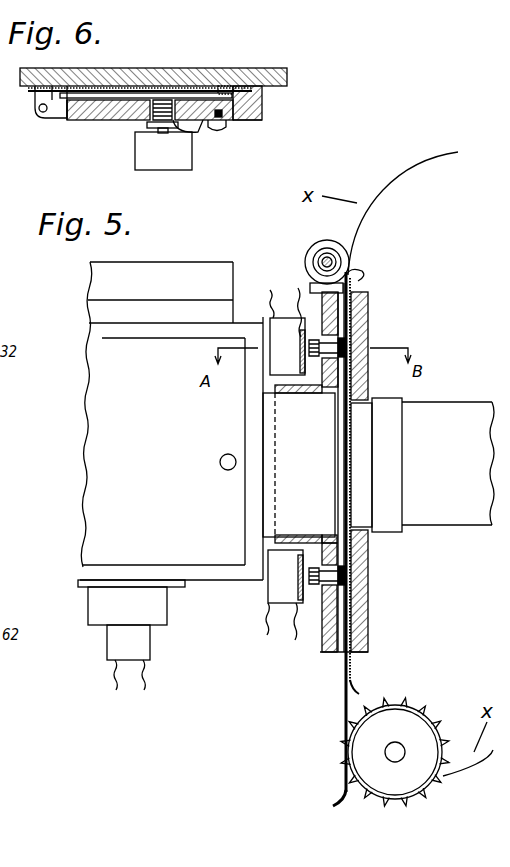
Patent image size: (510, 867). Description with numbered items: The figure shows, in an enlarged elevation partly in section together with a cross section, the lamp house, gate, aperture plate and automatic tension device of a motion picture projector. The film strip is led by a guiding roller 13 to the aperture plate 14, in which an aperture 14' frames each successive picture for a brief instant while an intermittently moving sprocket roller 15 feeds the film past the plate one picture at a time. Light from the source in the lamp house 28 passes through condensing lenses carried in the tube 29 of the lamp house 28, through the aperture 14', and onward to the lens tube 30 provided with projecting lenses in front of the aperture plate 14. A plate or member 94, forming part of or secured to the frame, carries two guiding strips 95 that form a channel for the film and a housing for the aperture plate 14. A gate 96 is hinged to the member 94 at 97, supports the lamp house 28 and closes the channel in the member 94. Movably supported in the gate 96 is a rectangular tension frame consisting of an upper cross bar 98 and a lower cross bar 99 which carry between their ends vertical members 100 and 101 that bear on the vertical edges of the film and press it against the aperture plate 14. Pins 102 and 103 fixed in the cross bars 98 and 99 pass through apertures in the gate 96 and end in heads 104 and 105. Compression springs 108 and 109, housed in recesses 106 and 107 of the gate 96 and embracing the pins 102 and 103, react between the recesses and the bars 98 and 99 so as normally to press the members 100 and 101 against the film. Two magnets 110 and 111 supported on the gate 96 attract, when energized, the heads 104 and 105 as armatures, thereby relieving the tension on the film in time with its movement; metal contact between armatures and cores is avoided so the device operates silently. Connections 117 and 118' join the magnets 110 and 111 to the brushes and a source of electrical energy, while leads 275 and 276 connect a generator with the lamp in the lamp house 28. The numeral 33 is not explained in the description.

In FIG. 5, the guiding roller 13 is at (306, 254).
In FIG. 6, the aperture plate 14 is at (140, 61).
In FIG. 5, the aperture plate 14 is at (370, 534).
In FIG. 5, the aperture 14' is at (396, 465).
In FIG. 5, the sprocket roller 15 is at (408, 722).
In FIG. 5, the lamp house 28 is at (97, 447).
In FIG. 5, the tube 29 is at (287, 507).
In FIG. 5, the lens tube 30 is at (466, 404).
In FIG. 5, the sprocket shaft 33 is at (397, 750).
In FIG. 6, the plate or member 94 is at (262, 70).
In FIG. 5, the plate or member 94 is at (369, 322).
In FIG. 6, the guiding strips 95 is at (72, 101).
In FIG. 6, the gate 96 is at (246, 120).
In FIG. 5, the gate 96 is at (320, 649).
In FIG. 6, the hinge 97 is at (45, 112).
In FIG. 6, the upper cross bar 98 is at (205, 97).
In FIG. 5, the upper cross bar 98 is at (347, 338).
In FIG. 5, the lower cross bar 99 is at (357, 588).
In FIG. 6, the vertical member 100 is at (230, 121).
In FIG. 6, the vertical member 101 is at (100, 120).
In FIG. 5, the vertical member 101 is at (342, 463).
In FIG. 5, the pin 102 is at (322, 362).
In FIG. 5, the pin 103 is at (322, 584).
In FIG. 6, the head 104 is at (155, 127).
In FIG. 5, the head 104 is at (321, 352).
In FIG. 5, the head 105 is at (309, 575).
In FIG. 6, the recess 106 is at (178, 118).
In FIG. 5, the recess 106 is at (323, 333).
In FIG. 5, the recess 107 is at (368, 607).
In FIG. 6, the compression spring 108 is at (163, 115).
In FIG. 5, the compression spring 108 is at (347, 340).
In FIG. 5, the compression spring 109 is at (348, 570).
In FIG. 6, the magnet 110 is at (168, 158).
In FIG. 5, the magnet 110 is at (279, 327).
In FIG. 5, the magnet 111 is at (278, 590).
In FIG. 6, the connection 117 is at (133, 140).
In FIG. 5, the connection 117 is at (267, 652).
In FIG. 6, the connection 118' is at (110, 173).
In FIG. 5, the connection 118' is at (242, 462).
In FIG. 5, the lead 275 is at (147, 673).
In FIG. 5, the lead 276 is at (112, 673).